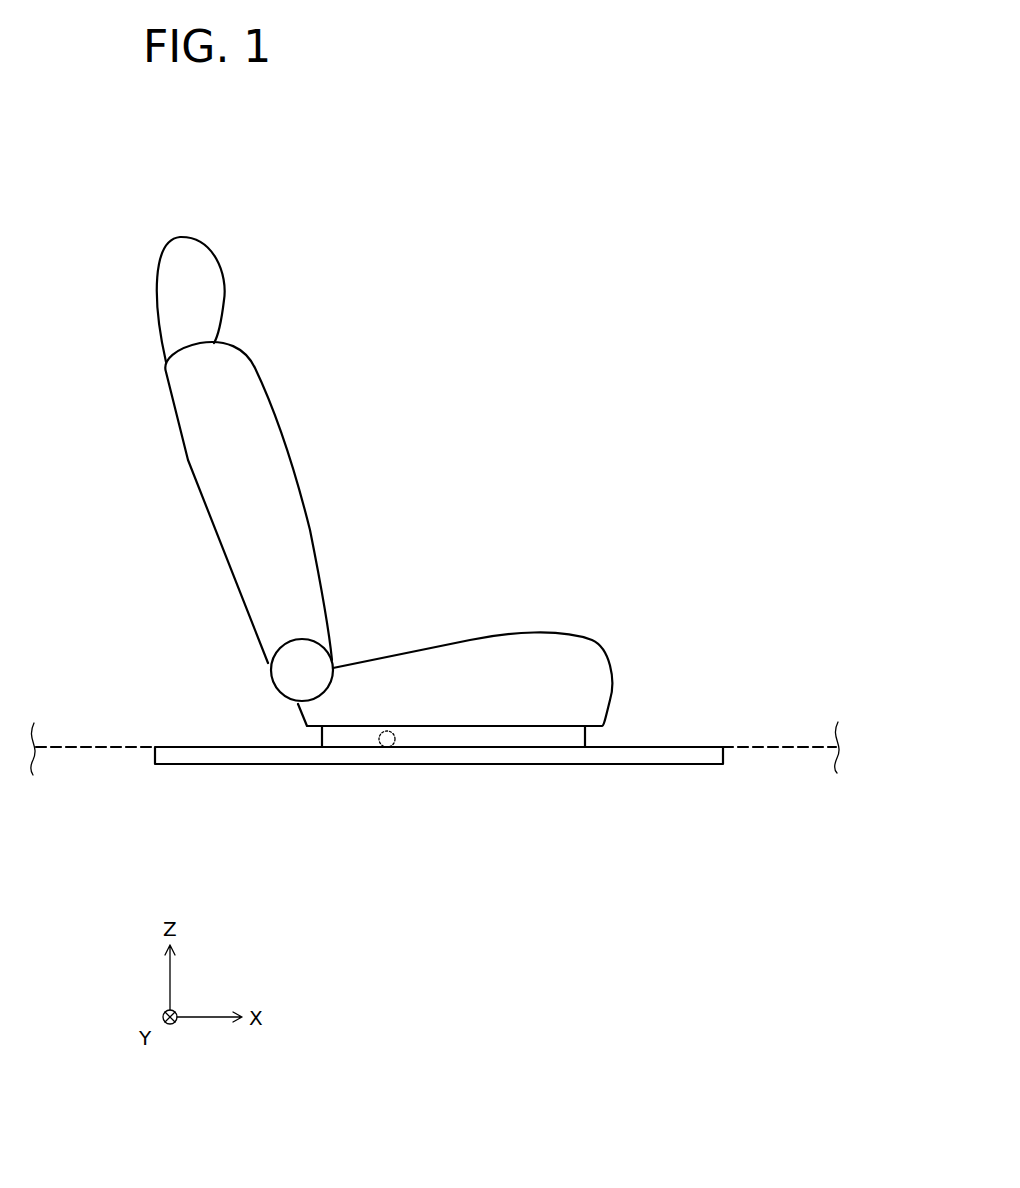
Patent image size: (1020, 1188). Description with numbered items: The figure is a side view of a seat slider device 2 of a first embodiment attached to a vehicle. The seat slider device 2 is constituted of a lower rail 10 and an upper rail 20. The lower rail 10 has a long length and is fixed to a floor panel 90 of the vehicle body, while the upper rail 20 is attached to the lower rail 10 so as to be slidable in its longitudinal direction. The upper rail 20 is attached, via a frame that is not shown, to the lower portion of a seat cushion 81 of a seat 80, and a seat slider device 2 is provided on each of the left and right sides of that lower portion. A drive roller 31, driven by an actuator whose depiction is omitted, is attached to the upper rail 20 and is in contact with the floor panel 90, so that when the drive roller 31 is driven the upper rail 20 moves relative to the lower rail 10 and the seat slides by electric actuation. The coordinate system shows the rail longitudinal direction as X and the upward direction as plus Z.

The seat slider device 2 is at (471, 882).
The lower rail 10 is at (515, 758).
The upper rail 20 is at (462, 738).
The drive roller 31 is at (384, 750).
The seat 80 is at (362, 447).
The seat cushion 81 is at (470, 640).
The floor panel 90 is at (90, 746).